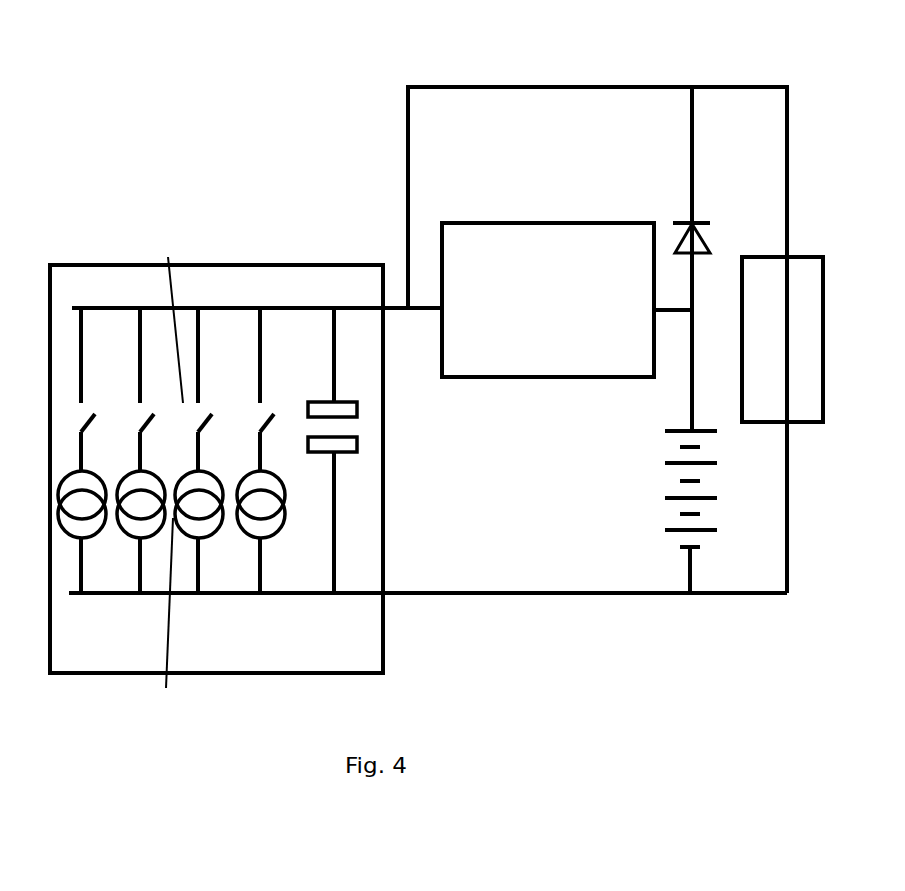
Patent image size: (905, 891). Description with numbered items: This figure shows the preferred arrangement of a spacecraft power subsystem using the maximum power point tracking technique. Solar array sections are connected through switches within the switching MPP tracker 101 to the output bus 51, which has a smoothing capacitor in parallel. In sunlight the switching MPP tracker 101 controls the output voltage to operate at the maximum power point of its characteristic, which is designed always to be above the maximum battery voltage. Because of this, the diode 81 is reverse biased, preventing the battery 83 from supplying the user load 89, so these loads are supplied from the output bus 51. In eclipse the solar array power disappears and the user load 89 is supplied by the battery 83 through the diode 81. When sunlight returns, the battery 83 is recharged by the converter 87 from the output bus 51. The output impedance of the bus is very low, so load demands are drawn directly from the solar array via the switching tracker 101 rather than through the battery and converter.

The bus 51 is at (598, 85).
The diode 81 is at (682, 213).
The battery 83 is at (657, 508).
The converter 87 is at (552, 355).
The user load 89 is at (763, 277).
The switching MPP tracker 101 is at (303, 633).